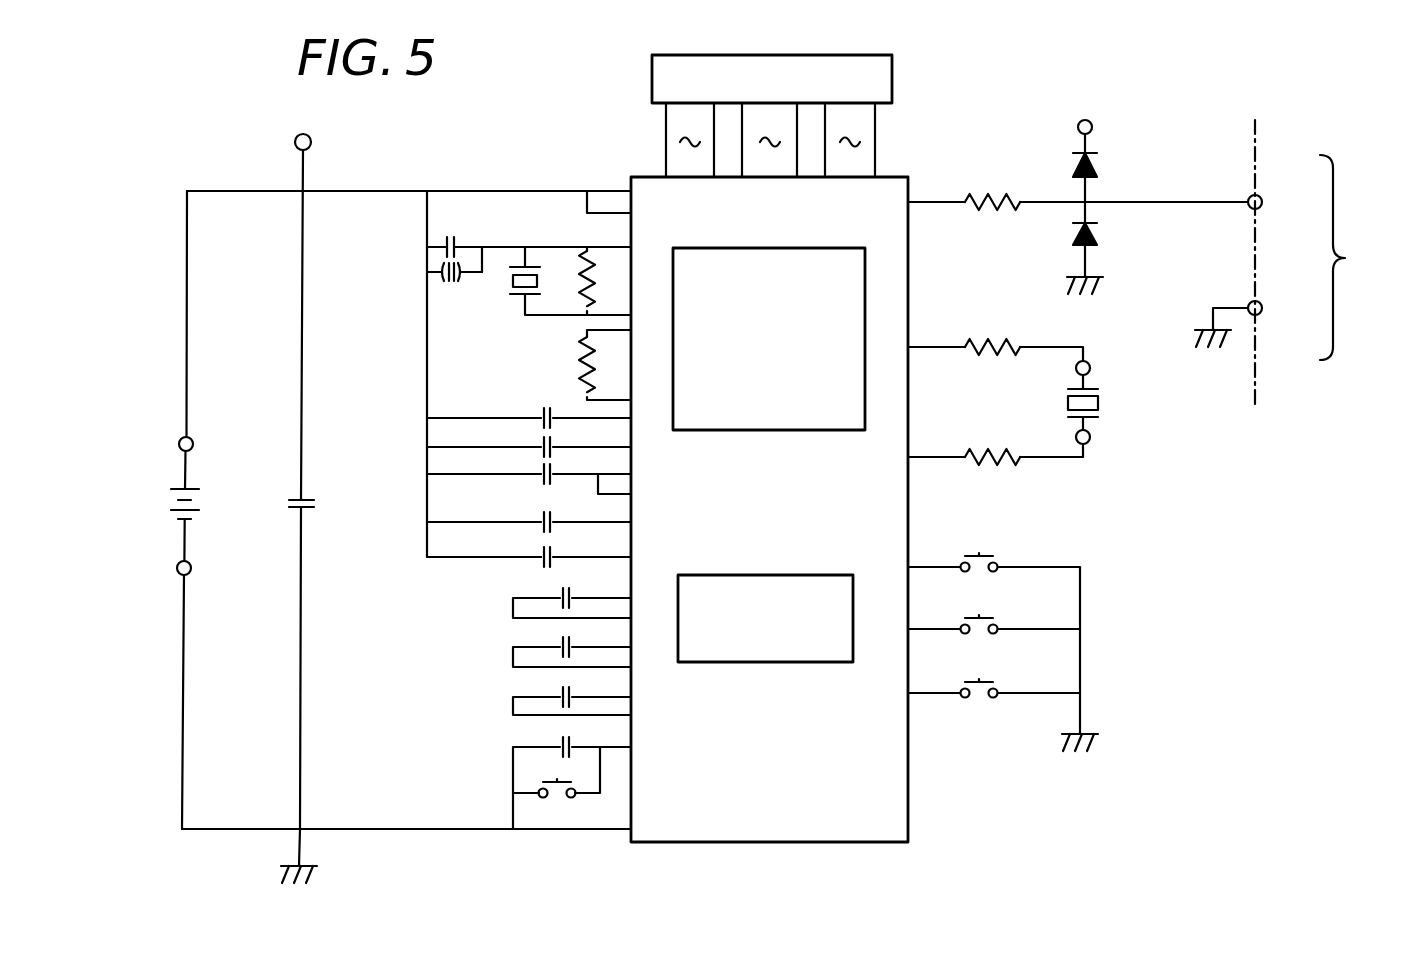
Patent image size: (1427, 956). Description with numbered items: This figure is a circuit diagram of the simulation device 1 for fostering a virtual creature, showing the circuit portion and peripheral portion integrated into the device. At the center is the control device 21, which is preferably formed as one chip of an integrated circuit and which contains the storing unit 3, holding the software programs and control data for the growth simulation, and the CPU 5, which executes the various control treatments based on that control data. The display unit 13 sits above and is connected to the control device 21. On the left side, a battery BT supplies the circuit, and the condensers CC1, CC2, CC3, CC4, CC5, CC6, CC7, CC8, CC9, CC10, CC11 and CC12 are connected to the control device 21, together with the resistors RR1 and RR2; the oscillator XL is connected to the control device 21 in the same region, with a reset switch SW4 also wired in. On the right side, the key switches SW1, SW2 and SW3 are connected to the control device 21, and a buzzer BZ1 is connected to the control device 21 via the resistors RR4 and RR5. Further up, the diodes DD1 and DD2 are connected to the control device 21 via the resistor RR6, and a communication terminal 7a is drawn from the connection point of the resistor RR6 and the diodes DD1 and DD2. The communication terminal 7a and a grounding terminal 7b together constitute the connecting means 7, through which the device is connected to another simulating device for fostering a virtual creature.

The simulation device 1 is at (1200, 103).
The storing unit 3 is at (765, 575).
The CPU 5 is at (770, 248).
The connecting means 7 is at (1300, 262).
The communication terminal 7a is at (1261, 198).
The grounding terminal 7b is at (1262, 311).
The display unit 13 is at (652, 77).
The control device 21 is at (899, 177).
The battery BT is at (168, 510).
The condenser CC1 is at (287, 508).
The condenser CC2 is at (572, 597).
The condenser CC3 is at (572, 646).
The condenser CC4 is at (572, 695).
The condenser CC5 is at (529, 551).
The condenser CC6 is at (529, 516).
The condenser CC7 is at (529, 473).
The condenser CC8 is at (529, 440).
The condenser CC9 is at (529, 412).
The condenser CC10 is at (569, 777).
The condenser CC11 is at (529, 241).
The condenser CC12 is at (454, 285).
The oscillator XL is at (517, 300).
The resistor RR1 is at (584, 365).
The resistor RR2 is at (595, 270).
The resistor RR4 is at (995, 343).
The resistor RR5 is at (995, 450).
The resistor RR6 is at (1078, 195).
The diode DD1 is at (1067, 161).
The diode DD2 is at (1065, 248).
The buzzer BZ1 is at (1060, 409).
The key switch SW1 is at (1003, 652).
The key switch SW2 is at (994, 639).
The key switch SW3 is at (994, 703).
The reset switch SW4 is at (556, 787).